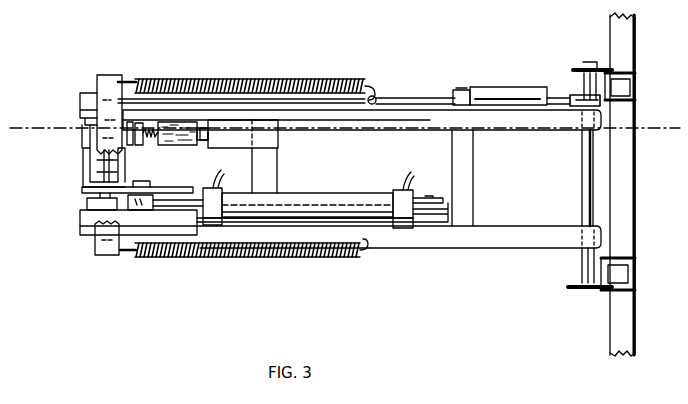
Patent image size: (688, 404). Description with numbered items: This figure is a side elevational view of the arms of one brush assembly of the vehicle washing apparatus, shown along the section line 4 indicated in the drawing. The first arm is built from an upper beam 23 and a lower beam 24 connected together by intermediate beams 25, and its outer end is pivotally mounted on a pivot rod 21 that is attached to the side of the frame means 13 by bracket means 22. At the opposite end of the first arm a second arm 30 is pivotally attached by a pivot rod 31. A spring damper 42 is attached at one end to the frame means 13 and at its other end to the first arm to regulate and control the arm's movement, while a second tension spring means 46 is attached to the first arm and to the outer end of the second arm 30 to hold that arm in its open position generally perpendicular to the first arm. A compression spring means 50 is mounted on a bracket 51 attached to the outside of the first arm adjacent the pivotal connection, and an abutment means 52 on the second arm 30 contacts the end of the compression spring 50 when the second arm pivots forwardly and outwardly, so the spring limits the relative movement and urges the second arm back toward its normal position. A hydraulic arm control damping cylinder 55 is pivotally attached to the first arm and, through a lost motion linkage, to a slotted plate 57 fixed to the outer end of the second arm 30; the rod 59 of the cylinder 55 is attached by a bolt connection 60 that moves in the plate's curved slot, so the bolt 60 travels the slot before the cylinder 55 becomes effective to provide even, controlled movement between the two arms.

The section line 4- 4 is at (46, 152).
The frame means 13 is at (627, 227).
The pivot rod 21 is at (586, 187).
The bracket means 22 is at (602, 73).
The upper beam 23 is at (404, 112).
The lower beam 24 is at (480, 238).
The intermediate beams 25 is at (463, 197).
The second arm 30 is at (83, 168).
The pivot rod 31 is at (98, 194).
The spring damper 42 is at (515, 90).
The second tension spring means 46 is at (288, 66).
The compression spring means 50 is at (153, 147).
The bracket 51 is at (262, 139).
The abutment means 52 is at (127, 130).
The hydraulic arm control damping unit or cylinder 55 is at (332, 200).
The slotted plate 57 is at (169, 187).
The rod 59 is at (178, 208).
The bolt connection 60 is at (146, 212).